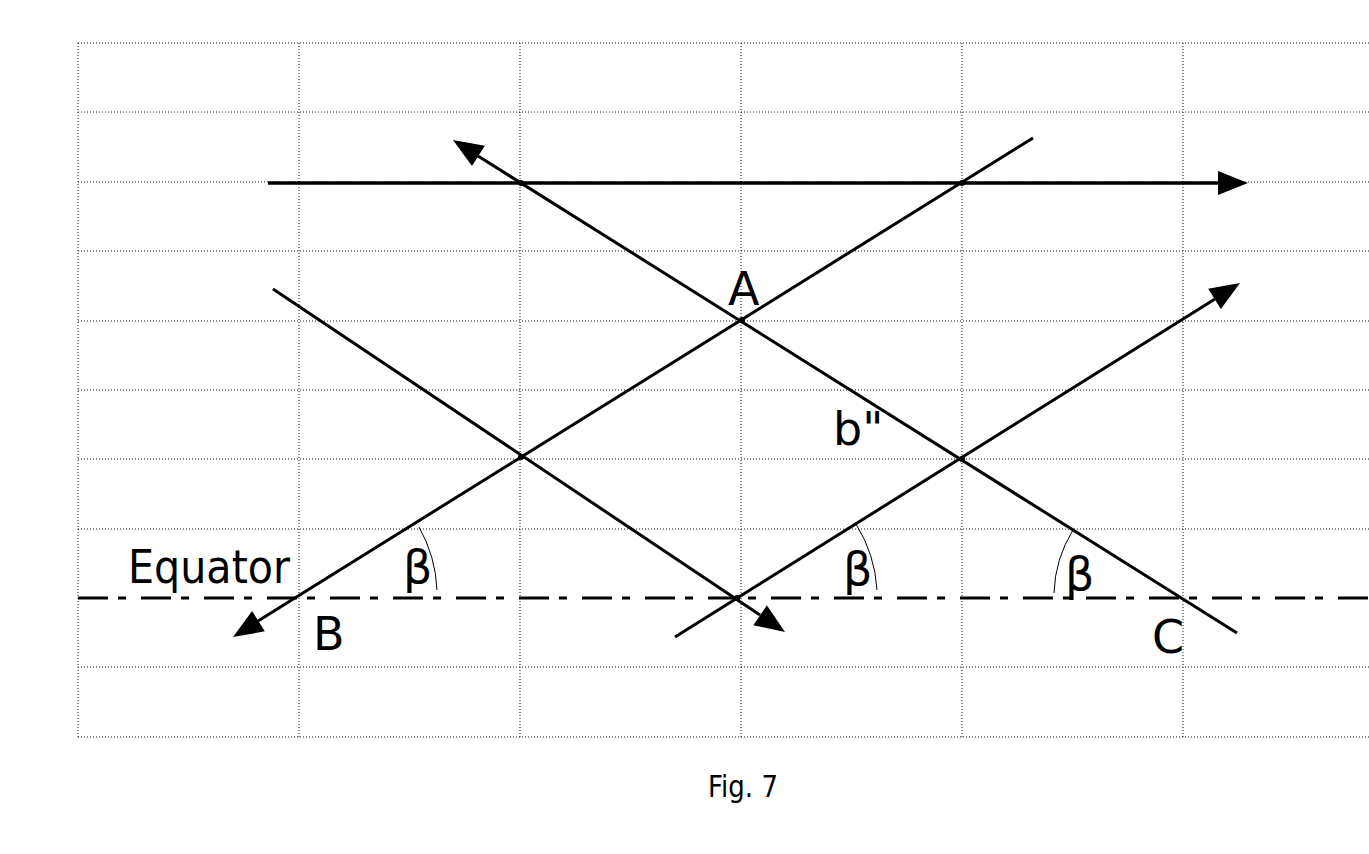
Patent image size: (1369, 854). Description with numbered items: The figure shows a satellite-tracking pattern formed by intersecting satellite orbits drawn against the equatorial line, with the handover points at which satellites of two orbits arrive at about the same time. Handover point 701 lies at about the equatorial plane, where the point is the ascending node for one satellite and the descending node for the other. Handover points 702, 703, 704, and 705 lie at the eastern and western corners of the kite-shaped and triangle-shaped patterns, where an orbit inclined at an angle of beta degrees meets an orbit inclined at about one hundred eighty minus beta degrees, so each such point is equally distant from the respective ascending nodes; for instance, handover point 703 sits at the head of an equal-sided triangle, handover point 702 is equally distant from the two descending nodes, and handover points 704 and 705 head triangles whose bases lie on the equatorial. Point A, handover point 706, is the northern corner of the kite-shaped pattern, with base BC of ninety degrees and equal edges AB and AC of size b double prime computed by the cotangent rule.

The handover point 701 is at (737, 598).
The handover point 702 is at (520, 459).
The handover point 703 is at (962, 459).
The handover point 704 is at (960, 180).
The handover point 705 is at (522, 180).
The handover point 706 is at (742, 320).